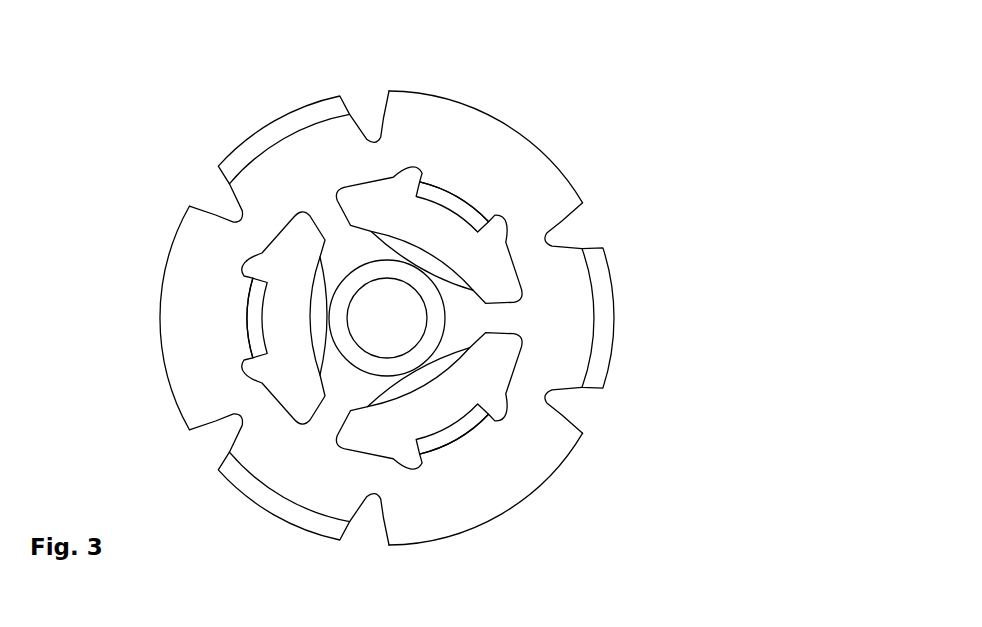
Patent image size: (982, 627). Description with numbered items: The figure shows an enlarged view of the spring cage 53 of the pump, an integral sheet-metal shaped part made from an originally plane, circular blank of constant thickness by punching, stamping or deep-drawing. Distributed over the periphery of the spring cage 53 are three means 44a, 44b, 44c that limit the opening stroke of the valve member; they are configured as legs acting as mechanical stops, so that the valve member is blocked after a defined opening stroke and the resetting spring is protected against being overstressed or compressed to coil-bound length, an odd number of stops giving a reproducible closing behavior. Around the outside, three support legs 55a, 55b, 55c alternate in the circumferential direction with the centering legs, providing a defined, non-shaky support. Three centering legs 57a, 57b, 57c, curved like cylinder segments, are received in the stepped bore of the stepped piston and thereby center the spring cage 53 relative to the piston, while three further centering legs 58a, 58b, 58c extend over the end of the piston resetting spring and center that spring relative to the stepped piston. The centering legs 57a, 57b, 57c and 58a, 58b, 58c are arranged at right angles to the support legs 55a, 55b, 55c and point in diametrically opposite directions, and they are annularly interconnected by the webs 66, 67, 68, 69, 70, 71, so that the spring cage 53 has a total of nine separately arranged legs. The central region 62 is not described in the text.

The spring cage 53 is at (575, 162).
The means limiting an opening stroke 44a is at (428, 257).
The means limiting an opening stroke 44b is at (430, 400).
The means limiting an opening stroke 44c is at (312, 317).
The support leg 55a is at (550, 443).
The support leg 55b is at (195, 395).
The support leg 55c is at (417, 113).
The centering leg 57a is at (467, 420).
The centering leg 57b is at (257, 337).
The centering leg 57c is at (435, 197).
The centering leg 58a is at (283, 505).
The centering leg 58b is at (275, 135).
The centering leg 58c is at (602, 342).
The hub 62 is at (433, 315).
The web 66 is at (372, 478).
The web 67 is at (257, 412).
The web 68 is at (253, 225).
The web 69 is at (370, 160).
The web 70 is at (535, 250).
The web 71 is at (535, 383).